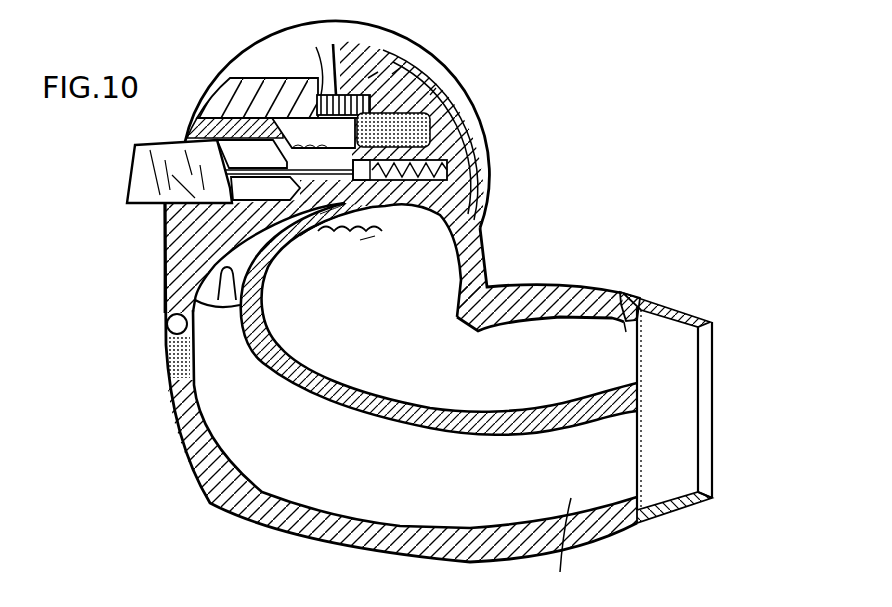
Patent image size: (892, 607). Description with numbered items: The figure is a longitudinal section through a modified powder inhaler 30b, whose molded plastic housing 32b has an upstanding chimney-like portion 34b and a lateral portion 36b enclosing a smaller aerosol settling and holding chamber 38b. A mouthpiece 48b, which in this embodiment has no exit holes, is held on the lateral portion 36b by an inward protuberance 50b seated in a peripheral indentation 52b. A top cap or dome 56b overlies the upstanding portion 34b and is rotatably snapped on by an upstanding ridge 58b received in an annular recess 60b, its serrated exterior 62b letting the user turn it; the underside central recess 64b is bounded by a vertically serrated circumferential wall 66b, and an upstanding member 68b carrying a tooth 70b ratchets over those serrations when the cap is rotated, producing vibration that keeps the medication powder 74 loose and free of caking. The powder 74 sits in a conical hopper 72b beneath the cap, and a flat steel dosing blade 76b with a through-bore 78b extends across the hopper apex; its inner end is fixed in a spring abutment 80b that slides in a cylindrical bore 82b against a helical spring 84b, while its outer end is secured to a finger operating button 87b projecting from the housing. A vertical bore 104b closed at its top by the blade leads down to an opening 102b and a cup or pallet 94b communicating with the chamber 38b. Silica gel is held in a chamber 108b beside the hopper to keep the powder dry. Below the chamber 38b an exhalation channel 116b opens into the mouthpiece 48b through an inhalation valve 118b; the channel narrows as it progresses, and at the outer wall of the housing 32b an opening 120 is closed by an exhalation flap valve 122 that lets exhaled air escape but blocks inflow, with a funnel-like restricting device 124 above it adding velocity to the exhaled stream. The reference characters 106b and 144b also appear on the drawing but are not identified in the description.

The powder inhaler 30b is at (190, 457).
The body 32b is at (180, 400).
The upstanding chimney-like portion 34b is at (173, 230).
The lateral portion 36b is at (573, 290).
The aerosol settling and holding chamber 38b is at (422, 342).
The mouthpiece 48b is at (676, 301).
The inward protuberance 50b is at (627, 293).
The peripheral indentation 52b is at (626, 322).
The top cap 56b is at (303, 58).
The upstanding ridge 58b is at (443, 106).
The annular recess 60b is at (437, 100).
The serrated periphery 62b is at (212, 102).
The central recess 64b is at (342, 84).
The vertical circumferential wall 66b is at (320, 108).
The upstanding member 68b is at (370, 77).
The tooth 70b is at (396, 72).
The conical hopper 72b is at (324, 139).
The medication powder 74 is at (252, 154).
The dosing blade 76b is at (265, 188).
The through-bore 78b is at (393, 130).
The spring abutment 80b is at (368, 213).
The cylindrical bore 82b is at (446, 184).
The helical spring 84b is at (447, 163).
The finger operating button 87b is at (137, 178).
The cup or pallet 94b is at (345, 249).
The opening 102b is at (369, 242).
The vertical bore 104b is at (310, 253).
The body 106b is at (462, 135).
The silica gel chamber 108b is at (430, 96).
The exhalation channel 116b is at (592, 546).
The inhalation valve 118b is at (648, 475).
The opening 120 is at (168, 319).
The exhalation flap valve 122 is at (170, 360).
The funnel-like restricting device 124 is at (262, 299).
The screen 144b is at (645, 348).